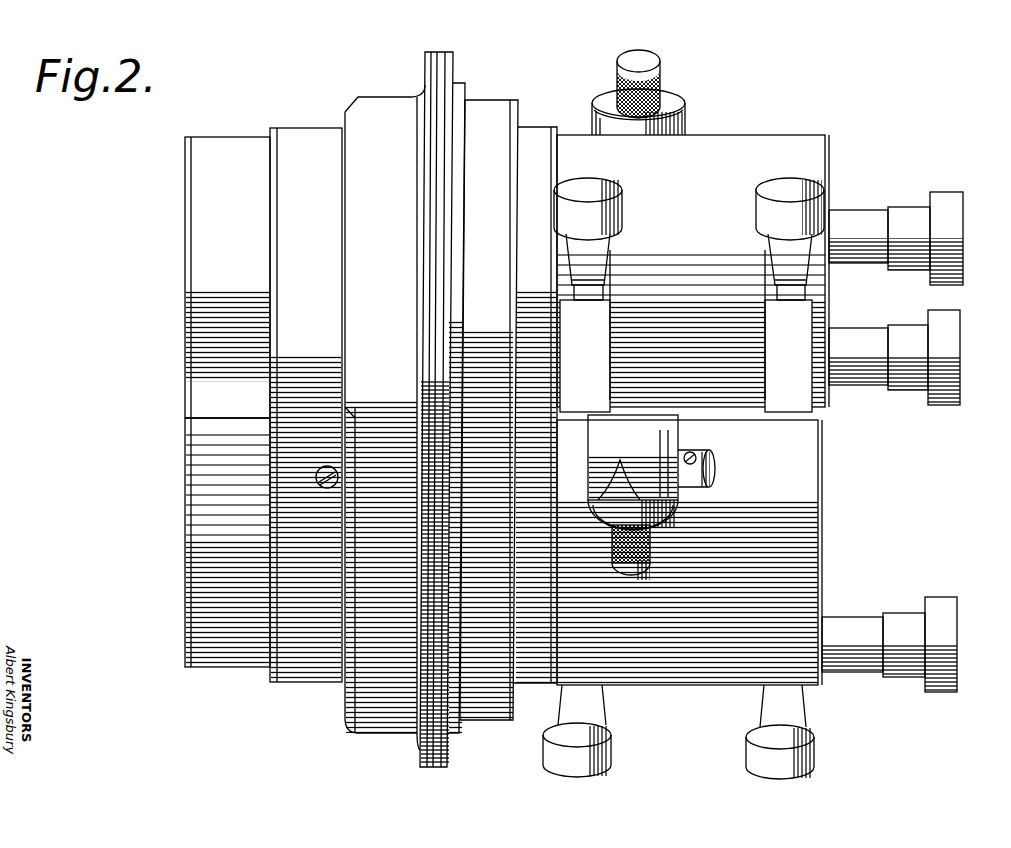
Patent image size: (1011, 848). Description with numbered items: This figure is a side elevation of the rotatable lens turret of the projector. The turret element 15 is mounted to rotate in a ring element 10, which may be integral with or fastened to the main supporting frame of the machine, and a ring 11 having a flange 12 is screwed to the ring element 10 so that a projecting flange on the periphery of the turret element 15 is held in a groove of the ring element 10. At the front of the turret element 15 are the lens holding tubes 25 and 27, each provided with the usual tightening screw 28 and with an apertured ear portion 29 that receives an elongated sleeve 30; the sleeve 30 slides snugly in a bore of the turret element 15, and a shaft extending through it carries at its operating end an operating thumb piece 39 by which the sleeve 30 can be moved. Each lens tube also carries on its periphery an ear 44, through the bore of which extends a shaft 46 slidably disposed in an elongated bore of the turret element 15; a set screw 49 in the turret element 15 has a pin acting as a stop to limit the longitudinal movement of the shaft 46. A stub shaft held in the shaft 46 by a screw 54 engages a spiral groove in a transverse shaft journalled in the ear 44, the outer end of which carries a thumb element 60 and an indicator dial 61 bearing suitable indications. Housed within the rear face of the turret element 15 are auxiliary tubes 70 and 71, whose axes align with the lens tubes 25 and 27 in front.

The ring element 10 is at (392, 96).
The ring 11 is at (447, 70).
The flange 12 is at (462, 96).
The turret element 15 is at (308, 140).
The lens holding tube 25 is at (807, 166).
The lens holding tube 27 is at (808, 532).
The tightening screw 28 is at (770, 240).
The apertured ear portion 29 is at (775, 340).
The elongated sleeve 30 is at (870, 263).
The operating thumb piece 39 is at (948, 200).
The ear 44 is at (686, 130).
The shaft 46 is at (716, 466).
The set screw 49 is at (322, 468).
The screw 54 is at (695, 455).
The thumb element 60 is at (652, 76).
The indicator dial 61 is at (680, 102).
The auxiliary tube 70 is at (242, 152).
The auxiliary tube 71 is at (200, 472).